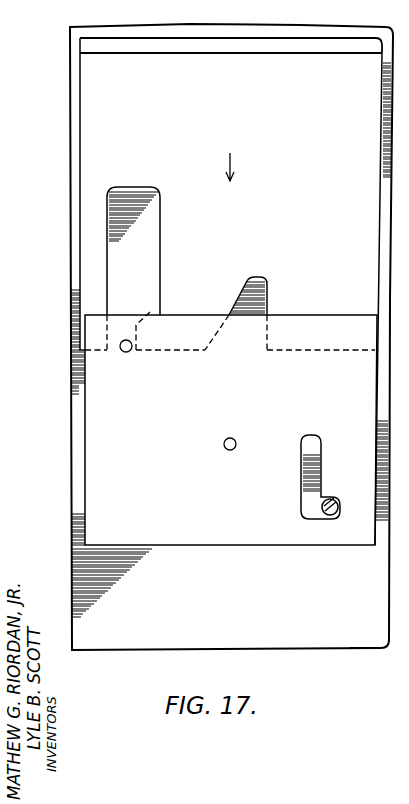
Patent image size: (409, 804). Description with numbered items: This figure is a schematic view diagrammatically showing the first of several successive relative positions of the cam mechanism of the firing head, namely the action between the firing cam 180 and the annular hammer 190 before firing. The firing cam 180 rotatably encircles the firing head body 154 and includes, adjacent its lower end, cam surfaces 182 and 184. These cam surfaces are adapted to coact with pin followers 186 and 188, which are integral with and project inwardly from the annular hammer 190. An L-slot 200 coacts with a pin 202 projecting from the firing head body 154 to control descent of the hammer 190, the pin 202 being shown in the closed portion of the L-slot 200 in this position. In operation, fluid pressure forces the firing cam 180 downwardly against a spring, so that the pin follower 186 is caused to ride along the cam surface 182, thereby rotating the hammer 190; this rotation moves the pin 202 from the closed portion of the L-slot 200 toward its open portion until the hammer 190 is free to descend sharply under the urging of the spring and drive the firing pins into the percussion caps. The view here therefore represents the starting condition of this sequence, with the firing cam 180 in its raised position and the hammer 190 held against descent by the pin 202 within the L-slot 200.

The firing head body 154 is at (367, 637).
The firing cam 180 is at (97, 102).
The cam surface 182 is at (250, 280).
The cam surface 184 is at (148, 312).
The pin follower 186 is at (230, 438).
The pin follower 188 is at (126, 352).
The annular hammer 190 is at (100, 433).
The L-slot 200 is at (302, 478).
The pin 202 is at (330, 515).